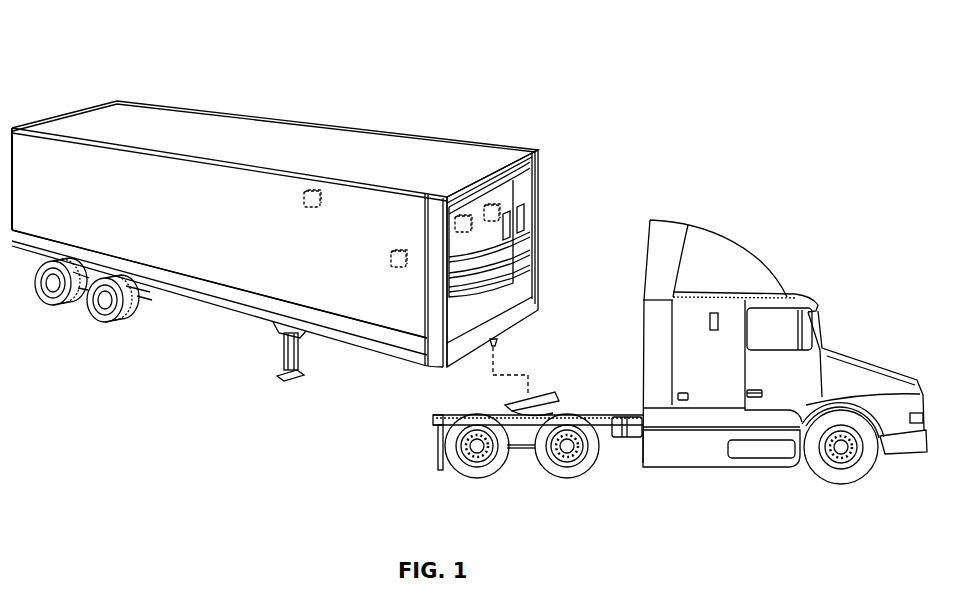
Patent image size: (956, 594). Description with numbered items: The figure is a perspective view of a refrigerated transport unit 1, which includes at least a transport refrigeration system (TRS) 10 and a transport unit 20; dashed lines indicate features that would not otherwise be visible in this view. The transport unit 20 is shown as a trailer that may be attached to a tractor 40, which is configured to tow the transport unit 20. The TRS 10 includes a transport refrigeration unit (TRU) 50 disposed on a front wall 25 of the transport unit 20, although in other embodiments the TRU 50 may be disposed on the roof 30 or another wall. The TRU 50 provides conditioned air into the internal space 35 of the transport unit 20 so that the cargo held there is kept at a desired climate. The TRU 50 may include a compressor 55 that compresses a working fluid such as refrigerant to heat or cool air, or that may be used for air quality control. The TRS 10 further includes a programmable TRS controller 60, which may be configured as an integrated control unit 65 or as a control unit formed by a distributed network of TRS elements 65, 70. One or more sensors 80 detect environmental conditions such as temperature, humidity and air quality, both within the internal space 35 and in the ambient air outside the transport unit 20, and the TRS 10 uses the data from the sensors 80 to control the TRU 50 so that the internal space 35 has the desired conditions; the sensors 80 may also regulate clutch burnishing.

The refrigerated transport unit 1 is at (88, 42).
The transport refrigeration system 10 is at (531, 94).
The transport unit 20 is at (547, 142).
The front wall 25 is at (530, 282).
The roof 30 is at (244, 126).
The internal space 35 is at (247, 283).
The tractor 40 is at (773, 245).
The transport refrigeration unit 50 is at (521, 195).
The compressor 55 is at (492, 203).
The programmable TRS controller 60 is at (408, 292).
The integrated control unit 65 is at (462, 213).
The TRS element 70 is at (395, 268).
The sensors 80 is at (313, 187).